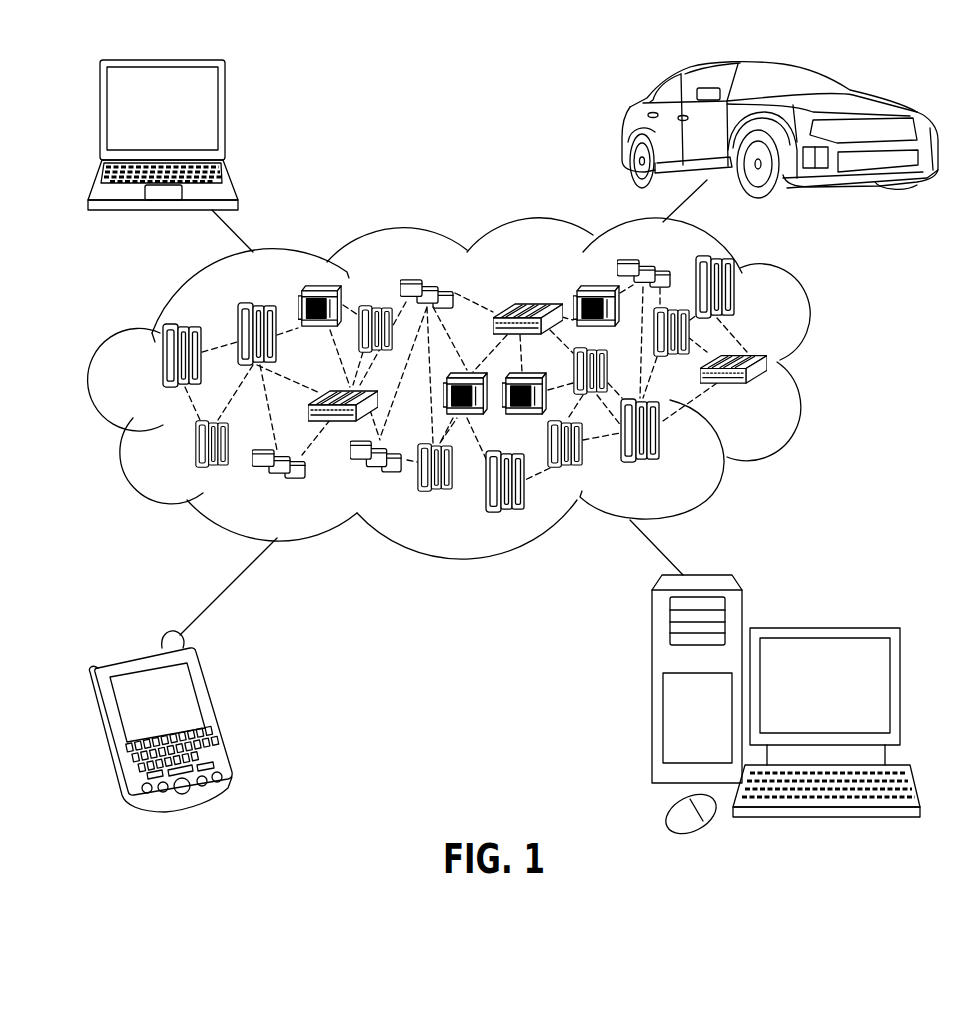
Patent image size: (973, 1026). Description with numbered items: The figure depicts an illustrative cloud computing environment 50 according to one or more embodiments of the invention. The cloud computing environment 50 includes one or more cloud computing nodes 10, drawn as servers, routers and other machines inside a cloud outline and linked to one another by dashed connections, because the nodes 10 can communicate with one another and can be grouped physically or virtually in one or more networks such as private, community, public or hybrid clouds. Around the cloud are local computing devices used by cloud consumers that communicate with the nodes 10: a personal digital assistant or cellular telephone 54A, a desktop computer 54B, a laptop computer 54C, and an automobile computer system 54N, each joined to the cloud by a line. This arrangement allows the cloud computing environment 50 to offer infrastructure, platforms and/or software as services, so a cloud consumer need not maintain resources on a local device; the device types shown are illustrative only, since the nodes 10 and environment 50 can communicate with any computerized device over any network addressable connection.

The cloud computing nodes 10 is at (770, 392).
The cloud computing environment 50 is at (823, 365).
The personal digital assistant (PDA) or cellular telephone 54A is at (217, 712).
The desktop computer 54B is at (823, 627).
The laptop computer 54C is at (225, 117).
The automobile computer system 54N is at (622, 128).